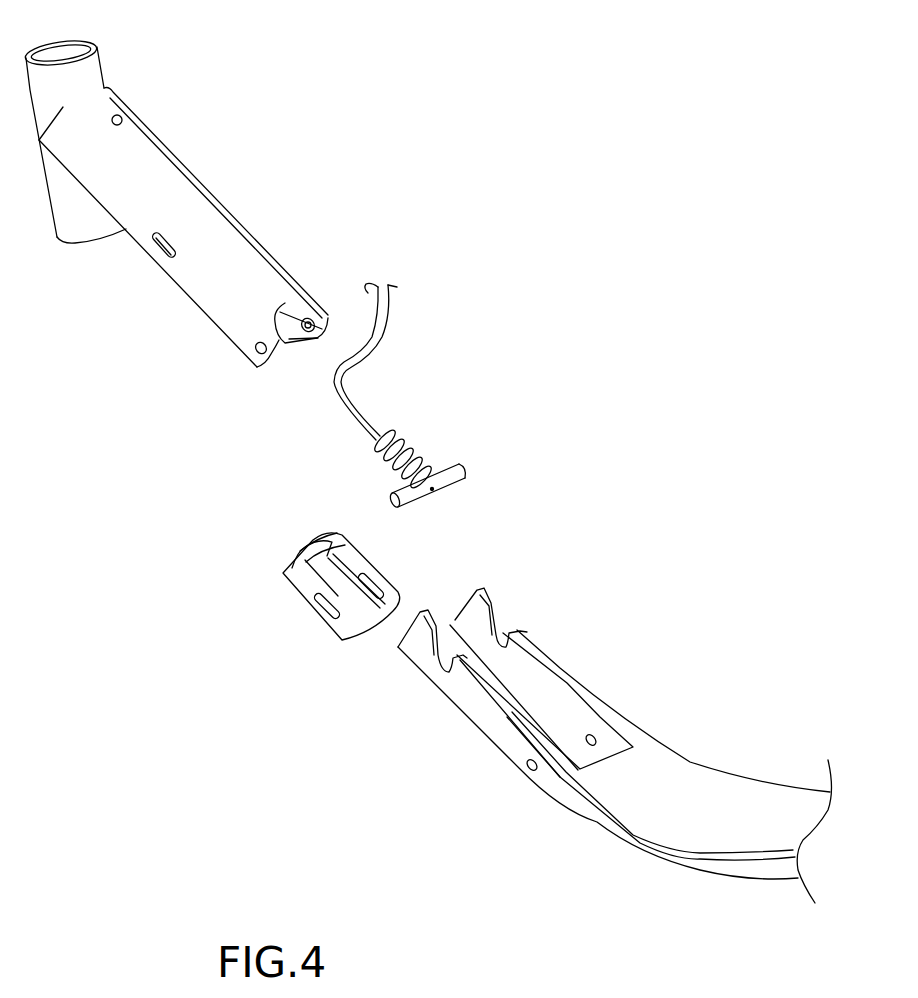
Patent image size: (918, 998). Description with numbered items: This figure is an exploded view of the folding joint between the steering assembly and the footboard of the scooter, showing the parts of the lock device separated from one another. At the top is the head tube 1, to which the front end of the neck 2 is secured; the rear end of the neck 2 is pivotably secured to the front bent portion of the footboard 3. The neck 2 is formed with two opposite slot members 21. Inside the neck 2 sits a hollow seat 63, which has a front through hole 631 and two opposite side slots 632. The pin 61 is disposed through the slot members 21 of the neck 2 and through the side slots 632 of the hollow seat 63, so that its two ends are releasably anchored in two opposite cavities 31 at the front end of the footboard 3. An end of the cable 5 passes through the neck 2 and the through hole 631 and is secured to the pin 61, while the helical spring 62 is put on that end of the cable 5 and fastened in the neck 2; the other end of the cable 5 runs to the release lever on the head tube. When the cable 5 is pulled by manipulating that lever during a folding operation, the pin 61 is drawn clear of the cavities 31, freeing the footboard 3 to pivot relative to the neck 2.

The head tube 1 is at (88, 68).
The neck 2 is at (158, 183).
The slot members 21 is at (168, 258).
The cable 5 is at (380, 338).
The helical spring 62 is at (413, 447).
The pin 61 is at (457, 477).
The hollow seat 63 is at (332, 577).
The front through hole 631 is at (317, 538).
The side slots 632 is at (467, 573).
The footboard 3 is at (615, 732).
The cavities 31 is at (440, 658).